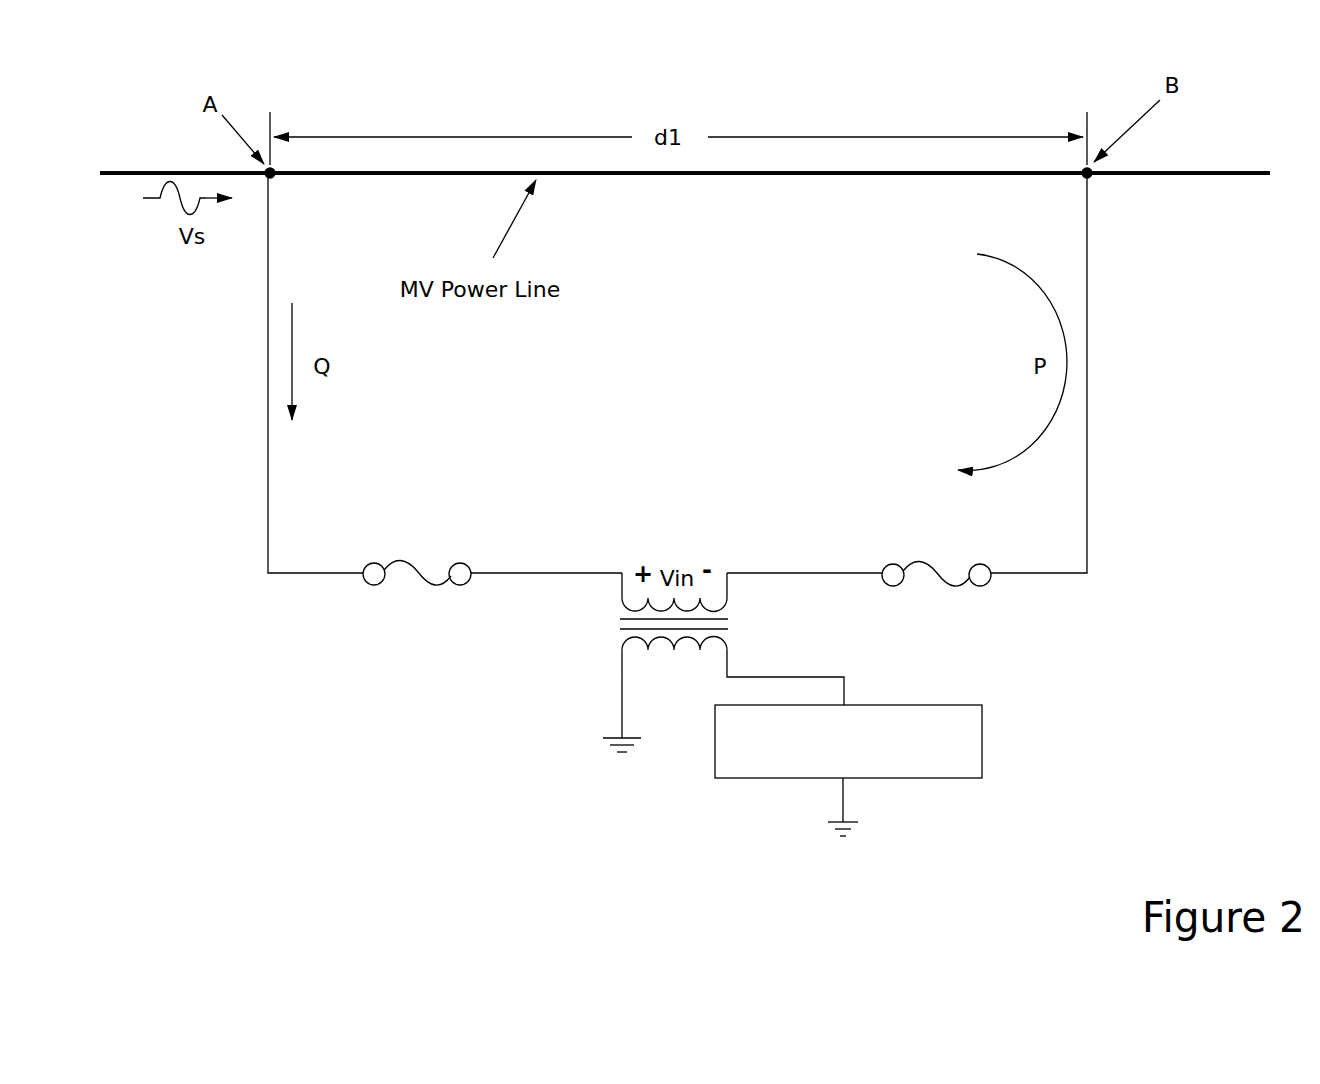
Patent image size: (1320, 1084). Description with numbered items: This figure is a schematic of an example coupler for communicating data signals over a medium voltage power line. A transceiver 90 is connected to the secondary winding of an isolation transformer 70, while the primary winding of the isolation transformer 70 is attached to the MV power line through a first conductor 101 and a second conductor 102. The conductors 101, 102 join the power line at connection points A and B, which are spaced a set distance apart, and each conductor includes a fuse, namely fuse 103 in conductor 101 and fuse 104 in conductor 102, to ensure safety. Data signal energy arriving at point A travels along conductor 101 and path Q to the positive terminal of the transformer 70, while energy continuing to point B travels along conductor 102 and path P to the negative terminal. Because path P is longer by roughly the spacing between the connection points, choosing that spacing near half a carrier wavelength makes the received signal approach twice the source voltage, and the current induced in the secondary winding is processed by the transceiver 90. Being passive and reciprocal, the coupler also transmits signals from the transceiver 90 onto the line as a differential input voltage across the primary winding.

The isolation transformer 70 is at (601, 634).
The transceiver 90 is at (848, 770).
The conductor 101 is at (322, 542).
The conductor 102 is at (1097, 529).
The fuse 103 is at (449, 554).
The fuse 104 is at (926, 549).